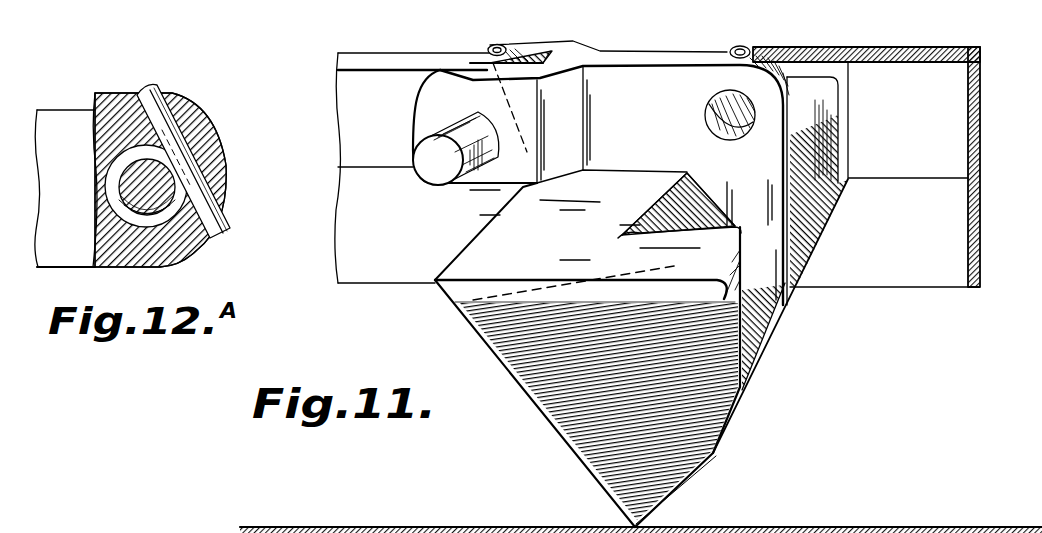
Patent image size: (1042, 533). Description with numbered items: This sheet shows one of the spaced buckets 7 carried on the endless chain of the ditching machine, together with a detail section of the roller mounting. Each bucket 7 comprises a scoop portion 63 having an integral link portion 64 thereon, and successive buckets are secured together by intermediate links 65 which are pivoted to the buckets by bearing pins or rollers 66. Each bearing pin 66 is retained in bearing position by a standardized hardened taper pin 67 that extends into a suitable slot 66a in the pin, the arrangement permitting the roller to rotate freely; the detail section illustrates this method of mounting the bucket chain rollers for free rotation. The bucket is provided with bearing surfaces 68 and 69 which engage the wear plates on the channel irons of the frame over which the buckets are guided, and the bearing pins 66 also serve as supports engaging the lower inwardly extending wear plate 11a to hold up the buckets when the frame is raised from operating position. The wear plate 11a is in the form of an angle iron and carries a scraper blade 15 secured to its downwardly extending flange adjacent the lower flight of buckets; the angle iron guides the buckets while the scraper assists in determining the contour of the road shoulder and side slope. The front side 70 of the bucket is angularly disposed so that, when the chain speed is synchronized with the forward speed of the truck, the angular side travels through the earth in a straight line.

In FIG. 11, the bucket 7 is at (786, 333).
In FIG. 11, the wear plate 11a is at (947, 110).
In FIG. 11, the scraper blade 15 is at (980, 130).
In FIG. 11, the scoop portion 63 is at (757, 377).
In FIG. 11, the link portion 64 is at (675, 63).
In FIG. 12A, the intermediate link 65 is at (85, 114).
In FIG. 11, the intermediate link 65 is at (388, 60).
In FIG. 12A, the bearing pin 66 is at (130, 222).
In FIG. 11, the bearing pin 66 is at (420, 172).
In FIG. 12A, the slot 66a is at (180, 257).
In FIG. 12A, the taper pin 67 is at (177, 142).
In FIG. 11, the taper pin 67 is at (492, 48).
In FIG. 11, the bearing surface 68 is at (823, 70).
In FIG. 11, the bearing surface 69 is at (603, 262).
In FIG. 11, the front side 70 is at (610, 393).